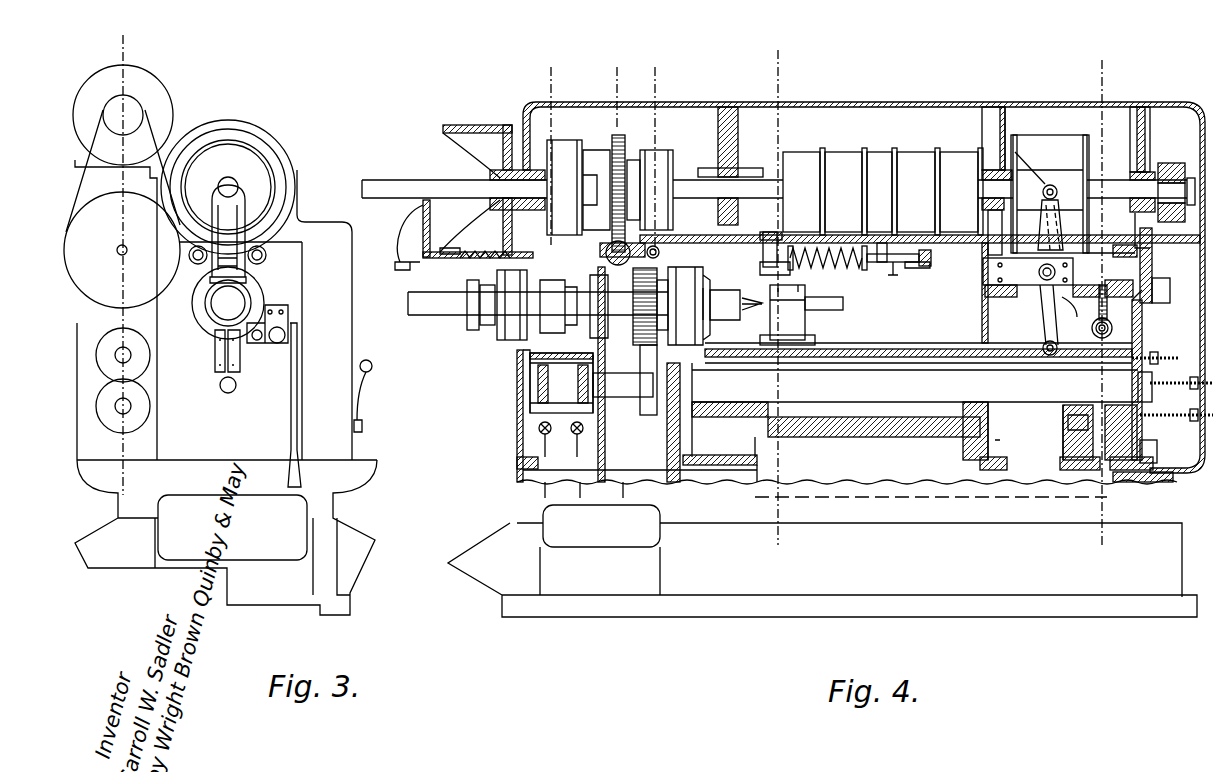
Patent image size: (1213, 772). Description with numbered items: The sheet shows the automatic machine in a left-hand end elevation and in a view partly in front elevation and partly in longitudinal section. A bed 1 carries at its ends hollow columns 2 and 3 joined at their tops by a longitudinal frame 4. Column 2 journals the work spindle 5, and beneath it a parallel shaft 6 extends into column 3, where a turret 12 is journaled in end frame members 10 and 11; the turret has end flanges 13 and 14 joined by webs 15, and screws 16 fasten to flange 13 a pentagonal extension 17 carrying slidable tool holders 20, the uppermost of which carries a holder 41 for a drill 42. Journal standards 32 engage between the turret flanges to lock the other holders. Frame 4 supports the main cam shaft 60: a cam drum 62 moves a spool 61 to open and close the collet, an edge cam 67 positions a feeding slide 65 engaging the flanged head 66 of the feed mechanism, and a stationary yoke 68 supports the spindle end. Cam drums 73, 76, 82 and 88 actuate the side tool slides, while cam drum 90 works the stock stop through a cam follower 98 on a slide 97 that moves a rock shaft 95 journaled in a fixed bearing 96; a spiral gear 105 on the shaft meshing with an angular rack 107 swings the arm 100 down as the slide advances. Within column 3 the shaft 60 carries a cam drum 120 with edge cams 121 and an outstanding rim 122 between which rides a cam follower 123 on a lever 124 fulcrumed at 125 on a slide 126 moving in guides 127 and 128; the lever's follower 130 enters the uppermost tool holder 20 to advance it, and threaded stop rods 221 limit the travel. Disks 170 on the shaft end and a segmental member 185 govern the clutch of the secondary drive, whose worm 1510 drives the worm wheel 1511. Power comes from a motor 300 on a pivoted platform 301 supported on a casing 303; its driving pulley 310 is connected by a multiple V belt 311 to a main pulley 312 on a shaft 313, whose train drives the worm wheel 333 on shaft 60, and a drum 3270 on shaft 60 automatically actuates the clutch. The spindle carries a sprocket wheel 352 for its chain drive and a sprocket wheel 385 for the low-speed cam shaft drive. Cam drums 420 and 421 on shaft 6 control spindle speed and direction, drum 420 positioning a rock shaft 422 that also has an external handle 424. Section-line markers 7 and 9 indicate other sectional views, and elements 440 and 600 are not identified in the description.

In FIG. 3, the bed 1 is at (363, 482).
In FIG. 4, the bed 1 is at (1020, 585).
In FIG. 4, the hollow column 2 is at (680, 482).
In FIG. 4, the hollow column 3 is at (1140, 487).
In FIG. 4, the longitudinal frame 4 is at (838, 232).
In FIG. 4, the work spindle 5 is at (578, 75).
In FIG. 4, the shaft 6 is at (830, 392).
In FIG. 4, the section line 7 is at (635, 75).
In FIG. 4, the section line 9 is at (673, 75).
In FIG. 3, the end frame member 10 is at (156, 40).
In FIG. 4, the end frame member 10 is at (985, 320).
In FIG. 4, the end frame member 11 is at (752, 75).
In FIG. 4, the turret 12 is at (1142, 431).
In FIG. 4, the end flange 13 is at (1074, 82).
In FIG. 4, the end flange 14 is at (1111, 440).
In FIG. 4, the webs 15 is at (1062, 440).
In FIG. 4, the screws 16 is at (968, 440).
In FIG. 4, the extension 17 is at (940, 449).
In FIG. 4, the tool holder 20 is at (903, 336).
In FIG. 4, the journal standards 32 is at (1060, 478).
In FIG. 4, the holder 41 is at (792, 328).
In FIG. 4, the drill 42 is at (843, 304).
In FIG. 3, the main cam shaft 60 is at (239, 180).
In FIG. 4, the main cam shaft 60 is at (398, 181).
In FIG. 4, the spool 61 is at (560, 305).
In FIG. 4, the cam drum 62 is at (566, 152).
In FIG. 4, the feeding slide 65 is at (456, 255).
In FIG. 4, the flanged head 66 is at (466, 322).
In FIG. 3, the edge cam 67 is at (246, 132).
In FIG. 4, the edge cam 67 is at (504, 125).
In FIG. 3, the stationary yoke 68 is at (239, 376).
In FIG. 4, the stationary yoke 68 is at (506, 355).
In FIG. 4, the cam drum 73 is at (840, 158).
In FIG. 4, the cam drum 76 is at (793, 158).
In FIG. 4, the cam drum 82 is at (955, 160).
In FIG. 4, the cam drum 88 is at (913, 160).
In FIG. 4, the cam drum 90 is at (877, 160).
In FIG. 4, the rock shaft 95 is at (894, 276).
In FIG. 4, the fixed bearing 96 is at (766, 270).
In FIG. 4, the slide 97 is at (921, 268).
In FIG. 4, the cam follower 98 is at (882, 243).
In FIG. 4, the arm 100 is at (826, 268).
In FIG. 4, the spiral gear 105 is at (922, 268).
In FIG. 4, the angular rack 107 is at (915, 243).
In FIG. 4, the cam drum 120 is at (1060, 137).
In FIG. 4, the edge cams 121 is at (1044, 167).
In FIG. 4, the outstanding rim 122 is at (1088, 160).
In FIG. 4, the cam follower 123 is at (1056, 190).
In FIG. 4, the lever 124 is at (1070, 224).
In FIG. 4, the fulcrum 125 is at (1037, 290).
In FIG. 4, the slide 126 is at (1097, 262).
In FIG. 4, the guide 127 is at (988, 262).
In FIG. 4, the guide 128 is at (1153, 284).
In FIG. 4, the follower 130 is at (1047, 350).
In FIG. 4, the disks 170 is at (1170, 163).
In FIG. 4, the segmental shaped member 185 is at (1151, 236).
In FIG. 4, the threaded stop rods 221 is at (1153, 385).
In FIG. 3, the motor 300 is at (155, 95).
In FIG. 3, the platform 301 is at (80, 165).
In FIG. 3, the casing 303 is at (78, 328).
In FIG. 3, the driving pulley 310 is at (113, 112).
In FIG. 3, the multiple V belt 311 is at (88, 184).
In FIG. 3, the main pulley 312 is at (80, 278).
In FIG. 3, the shaft 313 is at (117, 252).
In FIG. 4, the worm wheel 333 is at (630, 132).
In FIG. 4, the sprocket wheel 352 is at (657, 352).
In FIG. 4, the sprocket wheel 385 is at (630, 389).
In FIG. 4, the cam drum 420 is at (540, 402).
In FIG. 4, the cam drum 421 is at (605, 412).
In FIG. 4, the rock shaft 422 is at (538, 430).
In FIG. 3, the handle 424 is at (368, 380).
In FIG. 4, the handle 424 is at (392, 396).
In FIG. 4, the plate 440 is at (605, 440).
In FIG. 4, the spindle 600 is at (410, 300).
In FIG. 4, the worm 1510 is at (1093, 330).
In FIG. 4, the worm wheel 1511 is at (1098, 300).
In FIG. 4, the drum 3270 is at (665, 152).